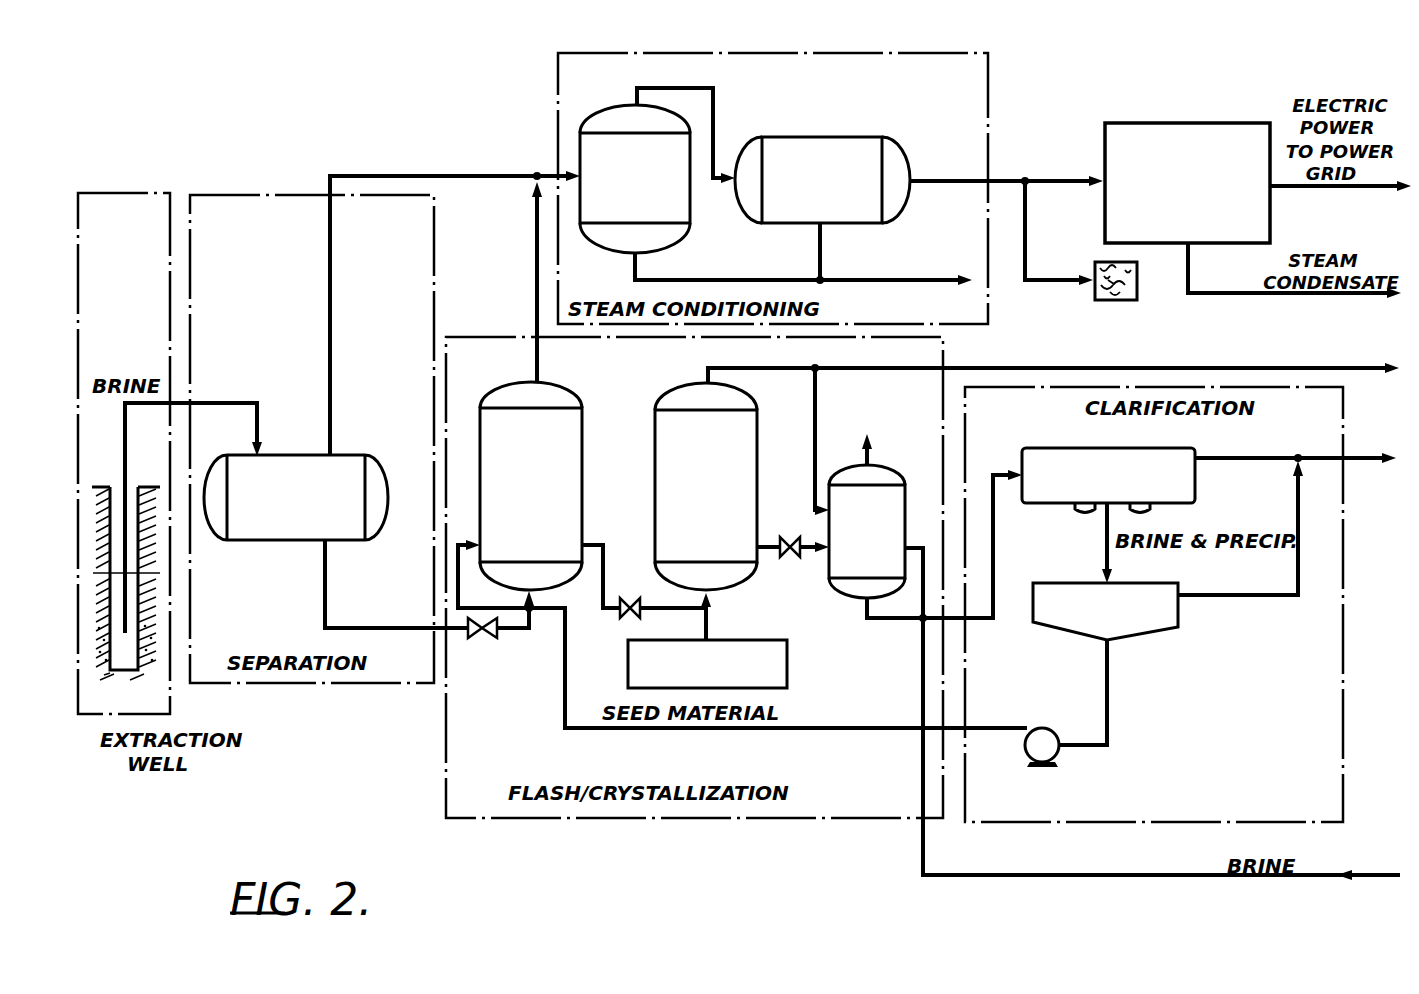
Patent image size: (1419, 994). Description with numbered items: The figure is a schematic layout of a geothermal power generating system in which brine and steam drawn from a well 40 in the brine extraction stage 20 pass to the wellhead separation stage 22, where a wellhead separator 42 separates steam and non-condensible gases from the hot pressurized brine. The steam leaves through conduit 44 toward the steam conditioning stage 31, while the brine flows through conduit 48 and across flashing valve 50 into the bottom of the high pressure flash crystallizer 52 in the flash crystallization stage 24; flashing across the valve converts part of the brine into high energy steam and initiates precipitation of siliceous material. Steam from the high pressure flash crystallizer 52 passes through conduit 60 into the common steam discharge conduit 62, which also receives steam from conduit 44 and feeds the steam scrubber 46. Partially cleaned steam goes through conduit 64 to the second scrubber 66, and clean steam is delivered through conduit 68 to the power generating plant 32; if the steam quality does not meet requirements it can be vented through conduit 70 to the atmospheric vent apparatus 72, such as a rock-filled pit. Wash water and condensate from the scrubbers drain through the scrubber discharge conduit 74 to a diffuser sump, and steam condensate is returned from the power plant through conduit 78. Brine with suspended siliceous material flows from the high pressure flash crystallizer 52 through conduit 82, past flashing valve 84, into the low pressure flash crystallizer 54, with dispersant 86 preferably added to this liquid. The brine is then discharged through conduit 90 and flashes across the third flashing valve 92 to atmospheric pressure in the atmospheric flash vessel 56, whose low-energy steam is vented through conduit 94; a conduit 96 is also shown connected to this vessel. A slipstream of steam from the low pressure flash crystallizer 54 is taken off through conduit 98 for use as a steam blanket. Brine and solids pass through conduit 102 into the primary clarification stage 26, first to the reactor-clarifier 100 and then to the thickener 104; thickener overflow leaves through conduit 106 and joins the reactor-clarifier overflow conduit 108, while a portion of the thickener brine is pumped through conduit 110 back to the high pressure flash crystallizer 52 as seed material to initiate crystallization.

The brine extraction stage 20 is at (128, 160).
The wellhead separation stage 22 is at (270, 189).
The flash crystallization stage 24 is at (446, 752).
The primary clarification stage 26 is at (1164, 826).
The steam conditioning stage 31 is at (558, 97).
The power generating plant 32 is at (1184, 123).
The well 40 is at (138, 487).
The wellhead separator 42 is at (300, 456).
The conduit 44 is at (332, 401).
The steam scrubber 46 is at (612, 106).
The conduit 48 is at (325, 587).
The flashing valve 50 is at (482, 638).
The high pressure flash crystallizer (HPX) 52 is at (512, 386).
The low pressure flash crystallizer (LPX) 54 is at (686, 386).
The atmospheric flash vessel 56 is at (899, 473).
The conduit 60 is at (537, 294).
The common steam discharge conduit 62 is at (478, 177).
The conduit 64 is at (713, 100).
The second scrubber 66 is at (815, 137).
The conduit 68 is at (938, 183).
The conduit 70 is at (1069, 280).
The atmospheric vent apparatus 72 is at (1116, 300).
The scrubber drain line to diffuser sump 74 is at (855, 282).
The conduit 78 is at (1210, 294).
The conduit 82 is at (603, 553).
The flashing valve 84 is at (643, 597).
The dispersant 86 is at (768, 640).
The conduit 90 is at (768, 546).
The third flashing valve 92 is at (794, 558).
The conduit 94 is at (874, 456).
The steam line from LPX to flash tank 96 is at (820, 402).
The conduit 98 is at (995, 368).
The reactor-clarifier 100 is at (1056, 448).
The conduit 102 is at (995, 530).
The thickener 104 is at (1075, 583).
The conduit 106 is at (1222, 596).
The reactor-clarifier overflow conduit 108 is at (1232, 460).
The conduit 110 is at (1105, 672).